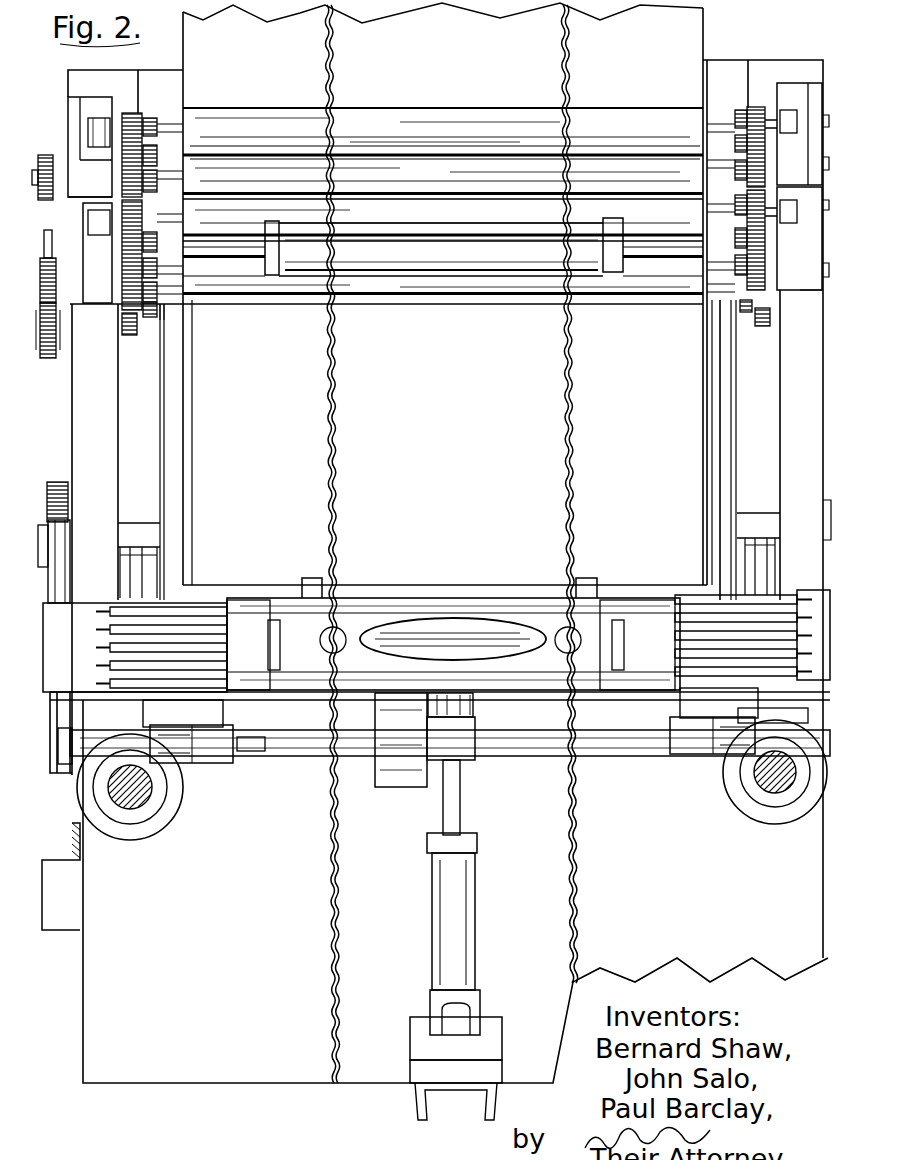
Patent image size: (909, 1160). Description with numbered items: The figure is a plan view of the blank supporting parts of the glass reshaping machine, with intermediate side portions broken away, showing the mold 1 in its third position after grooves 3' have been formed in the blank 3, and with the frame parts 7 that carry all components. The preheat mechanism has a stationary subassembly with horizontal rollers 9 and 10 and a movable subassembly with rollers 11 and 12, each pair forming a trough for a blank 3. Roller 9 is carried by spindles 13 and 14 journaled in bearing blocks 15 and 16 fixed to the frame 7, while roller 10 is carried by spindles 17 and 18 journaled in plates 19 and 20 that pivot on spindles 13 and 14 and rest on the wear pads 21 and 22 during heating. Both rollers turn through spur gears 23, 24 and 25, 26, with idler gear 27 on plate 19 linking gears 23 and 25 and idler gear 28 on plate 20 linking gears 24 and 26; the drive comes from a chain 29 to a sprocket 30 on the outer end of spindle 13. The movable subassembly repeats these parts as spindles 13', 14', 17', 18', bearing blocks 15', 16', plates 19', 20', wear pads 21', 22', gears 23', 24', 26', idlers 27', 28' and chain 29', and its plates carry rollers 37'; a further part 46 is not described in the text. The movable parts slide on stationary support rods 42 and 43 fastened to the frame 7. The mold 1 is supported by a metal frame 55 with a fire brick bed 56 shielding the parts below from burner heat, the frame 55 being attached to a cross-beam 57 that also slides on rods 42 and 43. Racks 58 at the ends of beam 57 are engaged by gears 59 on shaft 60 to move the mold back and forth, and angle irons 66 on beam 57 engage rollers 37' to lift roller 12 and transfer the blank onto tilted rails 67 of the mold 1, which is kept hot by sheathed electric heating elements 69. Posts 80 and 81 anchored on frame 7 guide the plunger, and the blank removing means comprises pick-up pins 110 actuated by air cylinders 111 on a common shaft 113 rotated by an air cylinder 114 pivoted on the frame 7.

The mold 1 is at (608, 606).
The blank 3 is at (453, 617).
The grooves 3' is at (453, 603).
The frame 7 is at (103, 72).
The roller 9 is at (222, 203).
The roller 10 is at (240, 108).
The roller 11 is at (222, 305).
The roller 12 is at (252, 268).
The spindle 13 is at (436, 179).
The spindle 13' is at (176, 315).
The spindle 14 is at (705, 148).
The spindle 14' is at (705, 251).
The bearing block 15 is at (75, 128).
The bearing block 15' is at (93, 268).
The bearing block 16 is at (800, 108).
The bearing block 16' is at (806, 303).
The spindle 17 is at (163, 113).
The spindle 17' is at (167, 240).
The spindle 18 is at (731, 105).
The spindle 18' is at (711, 203).
The plate 19 is at (132, 153).
The plate 19' is at (134, 254).
The plate 20 is at (792, 144).
The plate 20' is at (793, 242).
The wear pad 21 is at (74, 143).
The wear pad 21' is at (78, 250).
The wear pad 22 is at (793, 72).
The wear pad 22' is at (799, 238).
The spur gear 23 is at (149, 236).
The spur gear 23' is at (170, 254).
The spur gear 24 is at (771, 172).
The spur gear 24' is at (711, 262).
The spur gear 25 is at (128, 112).
The spur gear 26 is at (742, 123).
The spur gear 26' is at (720, 230).
The idler gear 27 is at (178, 149).
The idler gear 27' is at (181, 265).
The idler gear 28 is at (711, 139).
The idler gear 28' is at (711, 231).
The chain 29 is at (55, 251).
The chain 29' is at (52, 297).
The sprocket 30 is at (35, 160).
The roller 37' is at (446, 330).
The support rod 42 is at (160, 433).
The support rod 43 is at (732, 405).
The gear 46 is at (122, 326).
The metal frame 55 is at (183, 378).
The fire brick bed 56 is at (195, 404).
The cross-beam support member 57 is at (76, 606).
The rack member 58 is at (62, 540).
The gear 59 is at (55, 482).
The shaft 60 is at (128, 522).
The angle iron 66 is at (143, 550).
The tilted rail 67 is at (310, 578).
The sheathed electric heating element 69 is at (96, 684).
The upstanding post 80 is at (148, 794).
The upstanding post 81 is at (757, 780).
The blank pick-up pin 110 is at (255, 751).
The air cylinder 111 is at (86, 730).
The shaft 113 is at (520, 745).
The air cylinder 114 is at (470, 905).